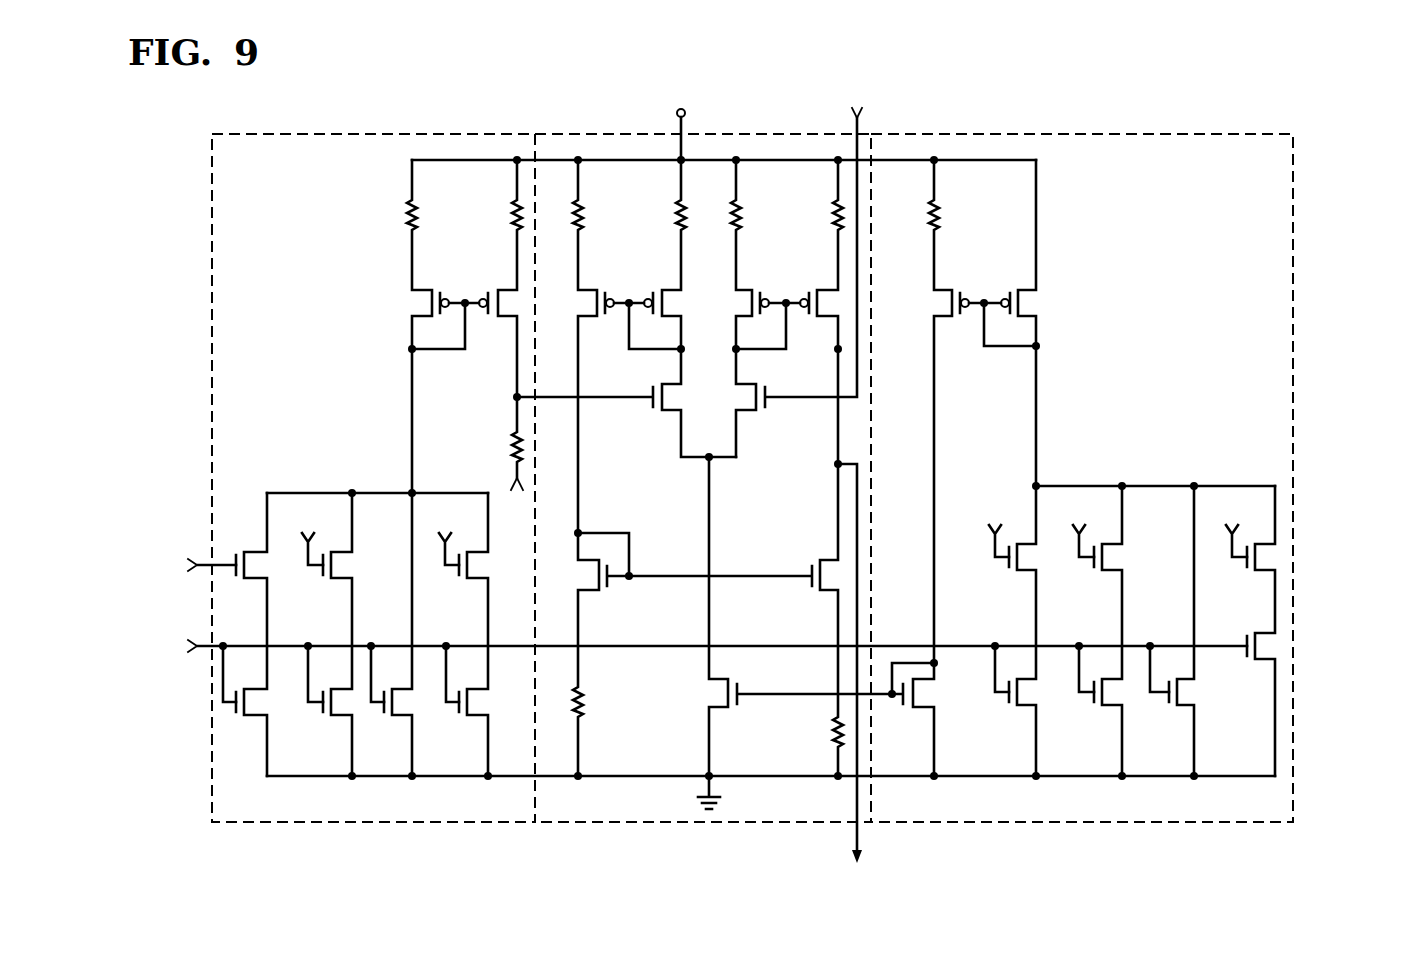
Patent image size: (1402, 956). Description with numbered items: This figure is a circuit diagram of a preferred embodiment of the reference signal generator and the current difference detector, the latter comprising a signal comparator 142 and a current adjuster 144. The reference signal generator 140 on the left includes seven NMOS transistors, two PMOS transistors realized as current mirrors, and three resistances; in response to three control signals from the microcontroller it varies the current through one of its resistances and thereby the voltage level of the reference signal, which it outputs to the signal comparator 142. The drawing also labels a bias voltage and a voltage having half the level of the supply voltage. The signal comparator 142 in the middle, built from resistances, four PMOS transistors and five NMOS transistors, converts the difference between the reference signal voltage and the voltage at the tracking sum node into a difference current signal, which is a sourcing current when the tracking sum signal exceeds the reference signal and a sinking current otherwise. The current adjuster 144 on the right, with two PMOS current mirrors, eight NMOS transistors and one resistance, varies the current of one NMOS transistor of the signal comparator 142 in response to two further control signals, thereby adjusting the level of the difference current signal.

The reference signal generator 140 is at (375, 134).
The signal comparator 142 is at (785, 133).
The current adjuster 144 is at (1078, 133).